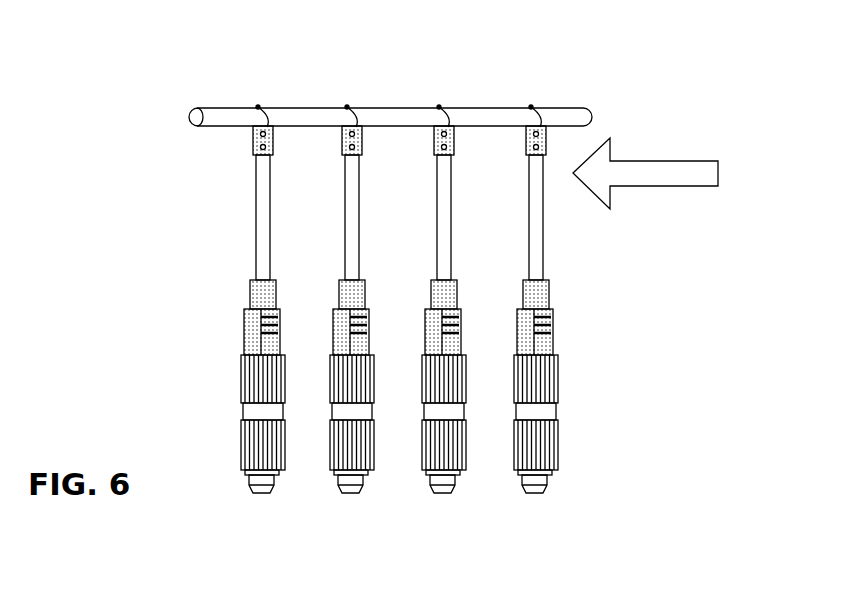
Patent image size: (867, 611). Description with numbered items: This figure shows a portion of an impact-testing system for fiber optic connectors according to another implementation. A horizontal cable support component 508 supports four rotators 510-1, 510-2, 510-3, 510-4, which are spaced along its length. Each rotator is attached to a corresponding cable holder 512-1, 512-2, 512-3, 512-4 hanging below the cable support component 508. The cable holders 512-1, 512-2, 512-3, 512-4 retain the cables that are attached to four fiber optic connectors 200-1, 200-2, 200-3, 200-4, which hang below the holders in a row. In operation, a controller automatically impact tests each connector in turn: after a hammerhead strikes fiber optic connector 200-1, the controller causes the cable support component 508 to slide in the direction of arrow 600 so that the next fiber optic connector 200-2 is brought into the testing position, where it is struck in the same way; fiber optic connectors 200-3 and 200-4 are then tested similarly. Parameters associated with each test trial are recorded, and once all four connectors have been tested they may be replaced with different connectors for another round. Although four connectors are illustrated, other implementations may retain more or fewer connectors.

The cable support component 508 is at (588, 110).
The arrow 600 is at (680, 161).
The rotator 510-1 is at (258, 107).
The rotator 510-2 is at (347, 107).
The rotator 510-3 is at (439, 107).
The rotator 510-4 is at (531, 107).
The cable holder 512-1 is at (229, 203).
The cable holder 512-2 is at (322, 203).
The cable holder 512-3 is at (410, 203).
The cable holder 512-4 is at (505, 203).
The fiber optic connector 200-1 is at (231, 410).
The fiber optic connector 200-2 is at (321, 410).
The fiber optic connector 200-3 is at (410, 410).
The fiber optic connector 200-4 is at (510, 410).